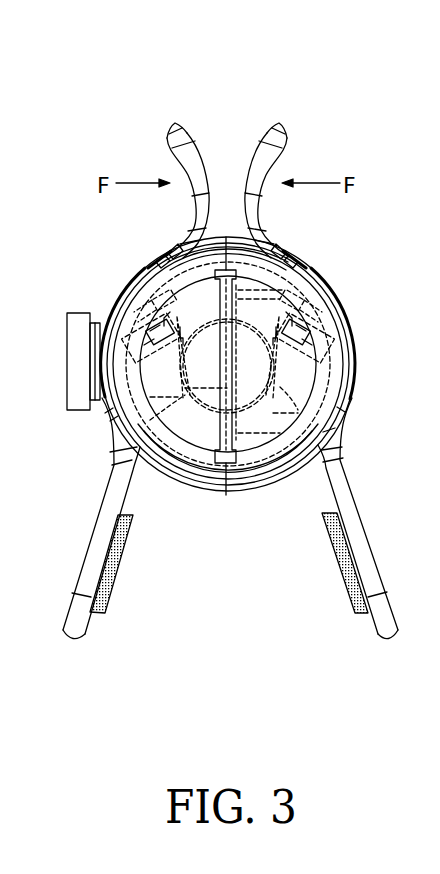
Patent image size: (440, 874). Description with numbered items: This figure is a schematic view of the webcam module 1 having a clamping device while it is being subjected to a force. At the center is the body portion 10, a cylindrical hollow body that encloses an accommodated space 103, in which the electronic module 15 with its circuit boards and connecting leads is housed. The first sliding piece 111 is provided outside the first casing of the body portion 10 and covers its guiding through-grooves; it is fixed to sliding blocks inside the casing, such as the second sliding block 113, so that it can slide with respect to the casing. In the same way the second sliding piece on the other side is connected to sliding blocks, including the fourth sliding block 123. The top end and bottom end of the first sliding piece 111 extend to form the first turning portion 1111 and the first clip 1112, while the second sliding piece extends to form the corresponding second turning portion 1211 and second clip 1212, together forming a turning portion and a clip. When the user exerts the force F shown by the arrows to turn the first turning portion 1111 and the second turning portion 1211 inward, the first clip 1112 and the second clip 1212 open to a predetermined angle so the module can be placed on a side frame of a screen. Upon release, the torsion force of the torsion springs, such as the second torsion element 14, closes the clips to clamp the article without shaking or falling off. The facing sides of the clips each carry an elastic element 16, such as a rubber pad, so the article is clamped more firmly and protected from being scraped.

The webcam module having a clamping device 1 is at (232, 20).
The body portion 10 is at (240, 495).
The accommodated space 103 is at (325, 432).
The first sliding piece 111 is at (338, 307).
The first turning portion 1111 is at (277, 134).
The first clip 1112 is at (385, 623).
The second sliding block 113 is at (310, 274).
The second turning portion 1211 is at (177, 134).
The second clip 1212 is at (73, 627).
The fourth sliding block 123 is at (148, 275).
The second torsion element 14 is at (340, 400).
The electronic module 15 is at (80, 400).
The elastic element 16 is at (338, 573).